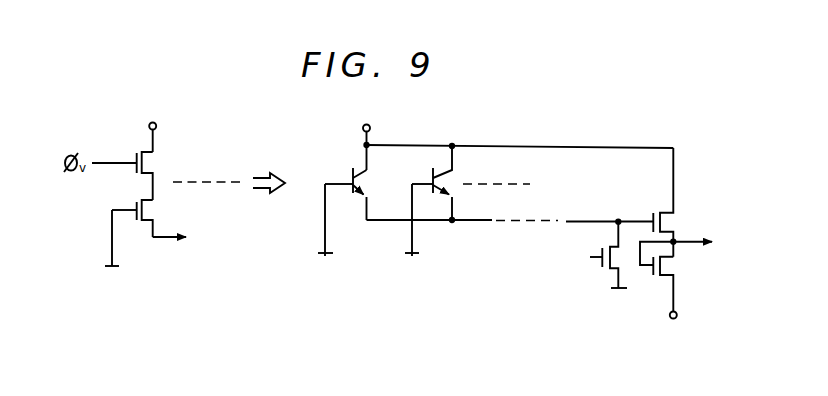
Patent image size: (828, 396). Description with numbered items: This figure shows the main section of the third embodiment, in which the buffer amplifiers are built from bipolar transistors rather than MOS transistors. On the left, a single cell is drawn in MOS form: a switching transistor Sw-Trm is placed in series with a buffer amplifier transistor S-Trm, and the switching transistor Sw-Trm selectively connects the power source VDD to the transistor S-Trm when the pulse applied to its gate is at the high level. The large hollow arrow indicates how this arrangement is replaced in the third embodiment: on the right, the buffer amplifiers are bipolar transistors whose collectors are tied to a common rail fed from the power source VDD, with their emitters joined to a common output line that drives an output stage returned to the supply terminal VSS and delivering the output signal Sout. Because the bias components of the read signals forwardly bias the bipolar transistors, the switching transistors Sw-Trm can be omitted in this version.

The switching transistor Sw-Trm is at (150, 164).
The buffer amplifier S-Trm is at (150, 208).
The power source VDD is at (265, 127).
The negative supply voltage terminal VSS is at (680, 327).
The output signal Sout is at (706, 232).